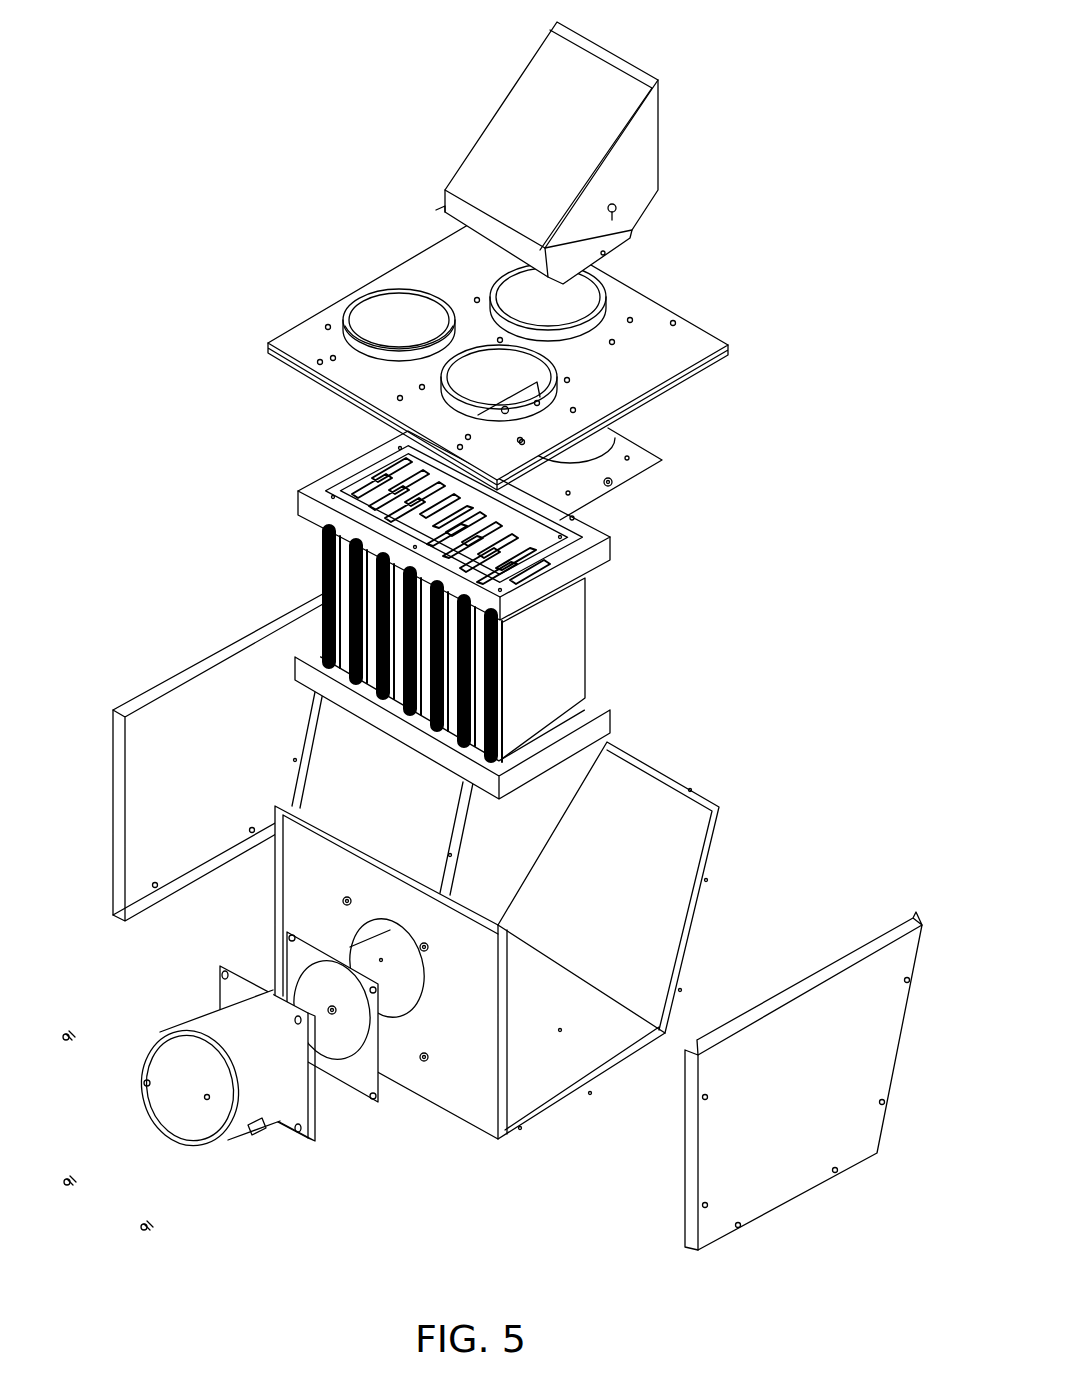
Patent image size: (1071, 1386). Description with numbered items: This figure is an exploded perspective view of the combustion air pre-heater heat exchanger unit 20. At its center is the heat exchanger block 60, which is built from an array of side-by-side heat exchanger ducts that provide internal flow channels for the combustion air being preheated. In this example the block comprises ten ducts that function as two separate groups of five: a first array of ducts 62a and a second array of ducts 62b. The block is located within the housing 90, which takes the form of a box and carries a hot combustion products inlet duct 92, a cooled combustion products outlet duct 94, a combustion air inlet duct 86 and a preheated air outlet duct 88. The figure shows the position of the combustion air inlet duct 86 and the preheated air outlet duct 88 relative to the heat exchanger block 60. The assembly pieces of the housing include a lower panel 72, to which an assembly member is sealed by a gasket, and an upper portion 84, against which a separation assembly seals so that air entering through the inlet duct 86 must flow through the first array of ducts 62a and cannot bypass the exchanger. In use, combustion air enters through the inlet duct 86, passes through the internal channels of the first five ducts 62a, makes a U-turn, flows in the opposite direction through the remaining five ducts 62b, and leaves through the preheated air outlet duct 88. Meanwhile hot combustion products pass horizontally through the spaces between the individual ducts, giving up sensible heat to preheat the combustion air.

The heat exchanger unit 20 is at (513, 632).
The heat exchanger block 60 is at (501, 596).
The first array of ducts 62a is at (598, 522).
The second array of ducts 62b is at (378, 468).
The lower panel 72 is at (573, 1031).
The upper portion 84 is at (524, 341).
The combustion air inlet duct 86 is at (550, 373).
The preheated air outlet duct 88 is at (362, 315).
The housing 90 is at (265, 935).
The hot combustion products inlet duct 92 is at (177, 1113).
The cooled combustion products outlet duct 94 is at (525, 97).